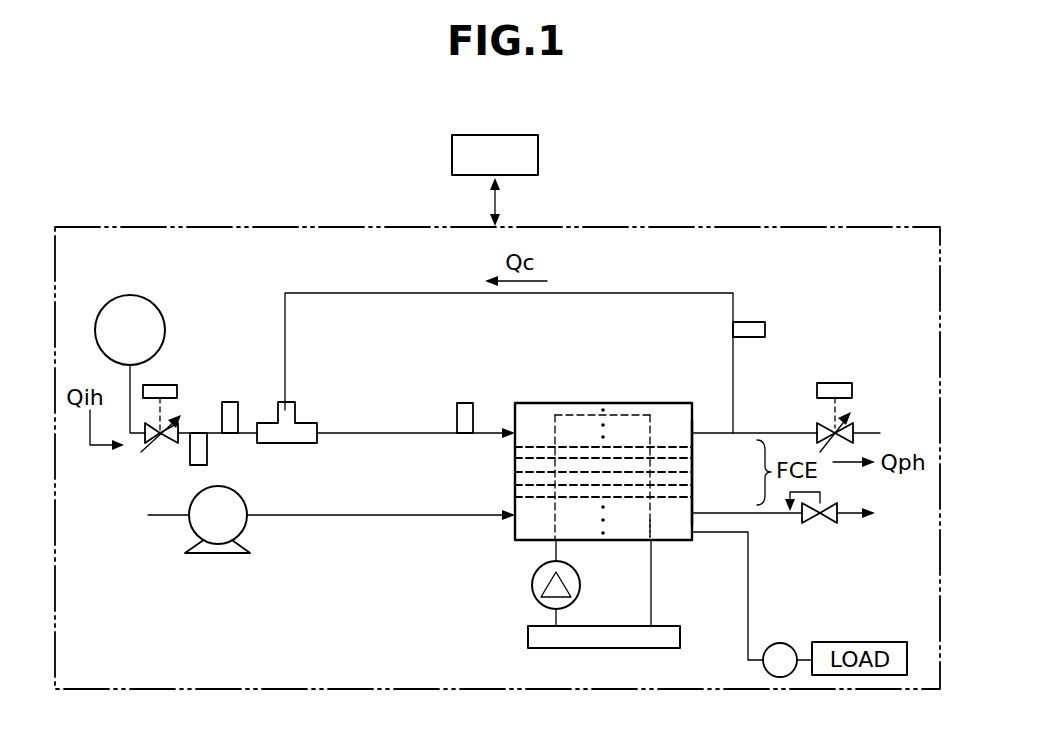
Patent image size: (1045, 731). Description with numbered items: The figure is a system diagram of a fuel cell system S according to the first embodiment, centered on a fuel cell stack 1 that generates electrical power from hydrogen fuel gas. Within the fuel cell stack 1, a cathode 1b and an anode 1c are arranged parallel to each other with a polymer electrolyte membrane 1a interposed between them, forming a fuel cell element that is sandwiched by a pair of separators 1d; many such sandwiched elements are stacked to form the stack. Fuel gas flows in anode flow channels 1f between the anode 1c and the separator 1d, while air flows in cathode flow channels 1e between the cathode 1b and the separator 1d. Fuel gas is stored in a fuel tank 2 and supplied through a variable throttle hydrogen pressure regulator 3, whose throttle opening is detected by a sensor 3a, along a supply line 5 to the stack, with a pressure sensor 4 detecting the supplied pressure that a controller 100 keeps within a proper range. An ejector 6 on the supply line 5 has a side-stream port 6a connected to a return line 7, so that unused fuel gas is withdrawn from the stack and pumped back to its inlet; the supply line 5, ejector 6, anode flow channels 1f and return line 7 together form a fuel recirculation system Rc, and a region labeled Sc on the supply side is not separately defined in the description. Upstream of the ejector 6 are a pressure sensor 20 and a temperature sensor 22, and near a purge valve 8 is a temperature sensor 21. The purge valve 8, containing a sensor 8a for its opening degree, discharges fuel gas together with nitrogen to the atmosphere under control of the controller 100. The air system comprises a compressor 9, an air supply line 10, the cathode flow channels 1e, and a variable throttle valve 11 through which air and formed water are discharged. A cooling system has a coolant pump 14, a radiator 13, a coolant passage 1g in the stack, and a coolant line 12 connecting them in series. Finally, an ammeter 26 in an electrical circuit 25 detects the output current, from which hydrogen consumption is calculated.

The fuel cell system S is at (172, 190).
The controller 100 is at (538, 155).
The fuel cell stack 1 is at (622, 402).
The polymer electrolyte membrane 1a is at (692, 472).
The cathode 1b is at (692, 497).
The anode 1c is at (692, 447).
The separator 1d is at (700, 440).
The cathode flow channel 1e is at (515, 490).
The anode flow channel 1f is at (515, 456).
The coolant passage 1g is at (651, 535).
The fuel tank 2 is at (125, 307).
The variable throttle hydrogen pressure regulator 3 is at (150, 442).
The sensor 3a is at (165, 385).
The pressure sensor 4 is at (465, 400).
The supply line 5 is at (395, 430).
The ejector 6 is at (297, 428).
The side-stream port 6a is at (288, 401).
The return line 7 is at (635, 292).
The purge valve 8 is at (828, 424).
The sensor 8a is at (853, 390).
The compressor 9 is at (222, 556).
The air supply line 10 is at (368, 520).
The variable throttle valve 11 is at (816, 525).
The coolant line 12 is at (652, 600).
The radiator 13 is at (527, 638).
The coolant pump 14 is at (531, 585).
The pressure sensor 20 is at (230, 400).
The temperature sensor 21 is at (765, 330).
The temperature sensor 22 is at (208, 458).
The electrical circuit 25 is at (750, 593).
The ammeter 26 is at (792, 645).
The hydrogen supply system Sc is at (182, 303).
The fuel recirculation system Rc is at (322, 283).